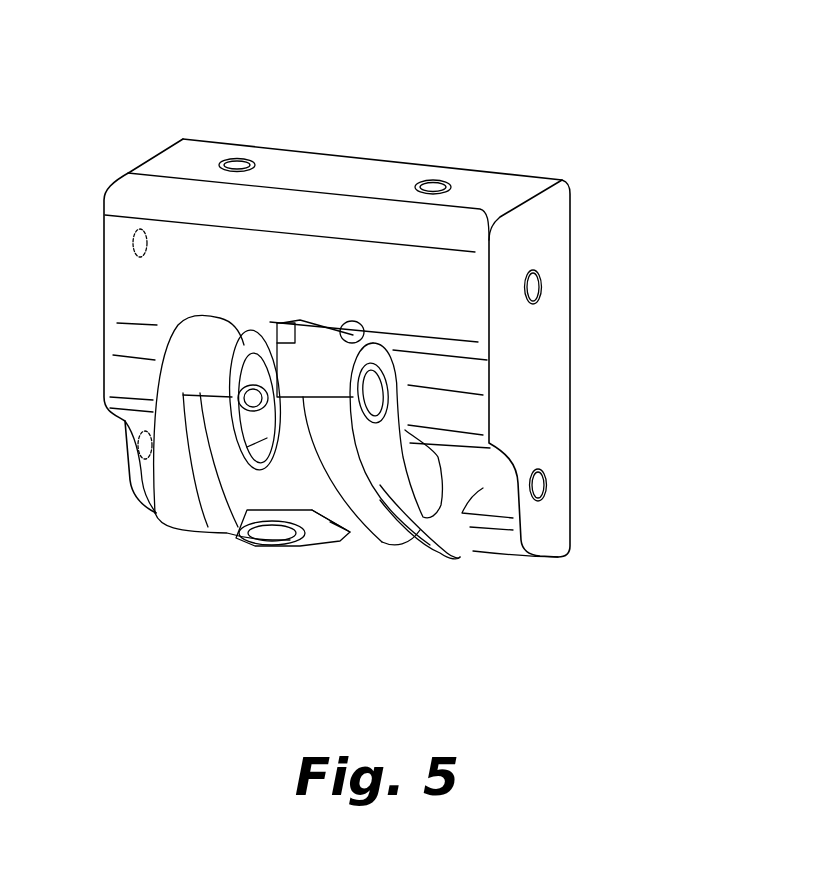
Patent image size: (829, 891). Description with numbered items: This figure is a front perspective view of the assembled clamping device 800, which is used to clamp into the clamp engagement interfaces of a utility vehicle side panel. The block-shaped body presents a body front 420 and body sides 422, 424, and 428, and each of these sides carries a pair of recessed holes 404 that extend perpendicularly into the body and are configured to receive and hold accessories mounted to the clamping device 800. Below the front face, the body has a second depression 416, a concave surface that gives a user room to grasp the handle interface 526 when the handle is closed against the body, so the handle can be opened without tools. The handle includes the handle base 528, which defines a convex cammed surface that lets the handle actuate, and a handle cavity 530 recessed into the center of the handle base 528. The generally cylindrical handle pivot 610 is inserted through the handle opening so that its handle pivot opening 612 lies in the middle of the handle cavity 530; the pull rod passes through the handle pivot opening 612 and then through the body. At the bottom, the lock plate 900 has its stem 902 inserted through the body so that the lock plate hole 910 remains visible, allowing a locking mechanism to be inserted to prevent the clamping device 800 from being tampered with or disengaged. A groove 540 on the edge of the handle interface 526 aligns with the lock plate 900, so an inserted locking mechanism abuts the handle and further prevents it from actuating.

The clamping device 800 is at (541, 114).
The body side 428 is at (92, 178).
The body side 422 is at (362, 178).
The recessed holes 404 is at (237, 160).
The body front 420 is at (440, 287).
The body side 424 is at (555, 425).
The second depression 416 is at (462, 513).
The handle base 528 is at (200, 332).
The handle pivot 610 is at (233, 363).
The handle pivot opening 612 is at (250, 397).
The handle interface 526 is at (247, 447).
The handle cavity 530 is at (165, 492).
The lock plate 900 is at (230, 553).
The lock plate hole 910 is at (307, 542).
The stem 902 is at (323, 538).
The groove 540 is at (322, 532).